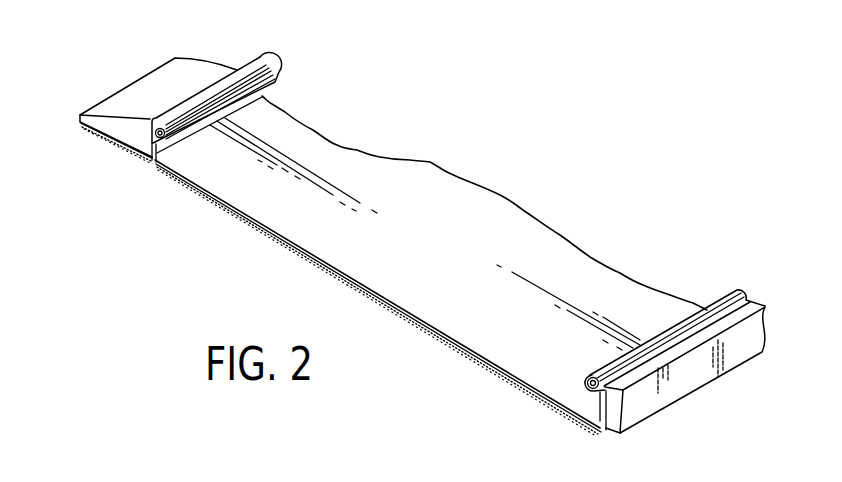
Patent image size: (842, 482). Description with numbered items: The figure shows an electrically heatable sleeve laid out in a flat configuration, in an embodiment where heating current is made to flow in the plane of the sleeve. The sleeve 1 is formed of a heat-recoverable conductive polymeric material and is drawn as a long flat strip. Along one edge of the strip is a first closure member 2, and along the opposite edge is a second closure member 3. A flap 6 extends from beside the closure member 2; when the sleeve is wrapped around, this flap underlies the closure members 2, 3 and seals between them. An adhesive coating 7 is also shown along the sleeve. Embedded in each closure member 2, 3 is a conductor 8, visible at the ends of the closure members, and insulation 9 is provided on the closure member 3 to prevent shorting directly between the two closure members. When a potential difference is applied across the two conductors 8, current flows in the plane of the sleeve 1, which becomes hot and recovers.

The sleeve 1 is at (378, 167).
The closure member 2 is at (242, 86).
The closure member 3 is at (717, 307).
The flap 6 is at (126, 96).
The adhesive coating 7 is at (265, 233).
The conductor 8 is at (156, 139).
The insulation 9 is at (685, 377).